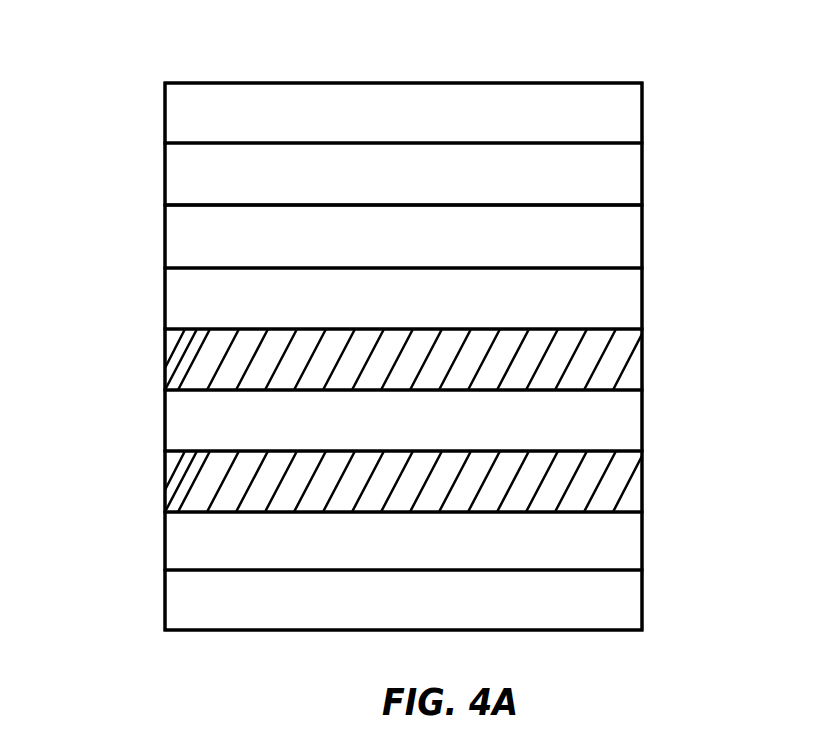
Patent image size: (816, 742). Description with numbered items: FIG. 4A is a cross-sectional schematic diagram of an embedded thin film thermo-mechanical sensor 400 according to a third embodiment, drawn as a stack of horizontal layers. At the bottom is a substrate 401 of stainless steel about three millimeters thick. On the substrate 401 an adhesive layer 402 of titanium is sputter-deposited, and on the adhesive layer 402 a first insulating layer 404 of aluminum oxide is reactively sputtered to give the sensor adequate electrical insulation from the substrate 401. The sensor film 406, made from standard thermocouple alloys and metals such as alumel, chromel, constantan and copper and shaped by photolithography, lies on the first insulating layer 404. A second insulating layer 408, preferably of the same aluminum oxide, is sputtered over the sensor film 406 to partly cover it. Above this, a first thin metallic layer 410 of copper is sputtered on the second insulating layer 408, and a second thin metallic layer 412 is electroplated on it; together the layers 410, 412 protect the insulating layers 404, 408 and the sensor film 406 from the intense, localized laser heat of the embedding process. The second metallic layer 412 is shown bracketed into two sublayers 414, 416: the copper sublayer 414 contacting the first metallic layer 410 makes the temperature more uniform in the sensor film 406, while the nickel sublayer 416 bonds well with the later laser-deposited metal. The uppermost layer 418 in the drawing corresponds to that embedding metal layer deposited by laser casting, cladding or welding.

The embedded thin film thermo-mechanical sensor 400 is at (207, 52).
The substrate 401 is at (642, 605).
The adhesive layer 402 is at (642, 545).
The first insulating layer 404 is at (642, 485).
The sensor film 406 is at (642, 425).
The second insulating layer 408 is at (642, 360).
The first thin metallic layer 410 is at (642, 300).
The second thin metallic layer 412 is at (157, 145).
The sublayer 414 is at (642, 235).
The sublayer 416 is at (642, 172).
The top layer 418 is at (642, 110).